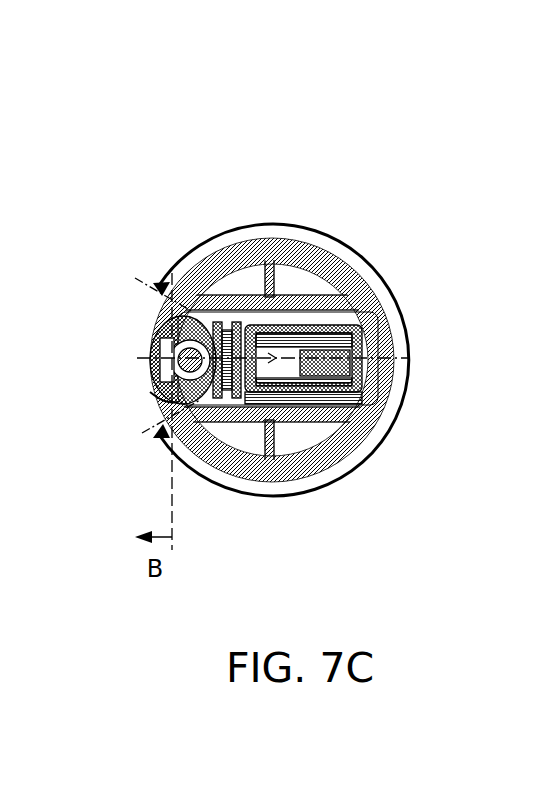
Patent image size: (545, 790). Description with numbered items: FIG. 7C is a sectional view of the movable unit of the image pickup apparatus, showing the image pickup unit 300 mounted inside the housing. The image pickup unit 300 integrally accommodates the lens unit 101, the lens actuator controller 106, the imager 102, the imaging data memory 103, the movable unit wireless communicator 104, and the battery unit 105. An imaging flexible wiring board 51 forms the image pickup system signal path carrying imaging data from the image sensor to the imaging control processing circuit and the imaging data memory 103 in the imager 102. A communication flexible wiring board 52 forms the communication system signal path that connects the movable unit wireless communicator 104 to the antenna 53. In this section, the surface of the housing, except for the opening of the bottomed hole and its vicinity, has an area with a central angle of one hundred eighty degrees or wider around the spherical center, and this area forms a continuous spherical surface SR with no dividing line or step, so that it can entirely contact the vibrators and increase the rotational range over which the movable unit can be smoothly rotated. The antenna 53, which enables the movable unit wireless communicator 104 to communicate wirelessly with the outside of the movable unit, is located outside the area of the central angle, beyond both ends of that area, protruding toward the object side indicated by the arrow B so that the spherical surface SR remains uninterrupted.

The image pickup unit 300 is at (158, 332).
The lens unit 101 is at (148, 338).
The imager 102 is at (234, 250).
The imaging data memory 103 is at (357, 348).
The lens actuator controller 106 is at (233, 332).
The imaging flexible wiring board 51 is at (242, 335).
The battery unit 105 is at (357, 356).
The movable unit wireless communicator 104 is at (285, 398).
The communication flexible wiring board 52 is at (247, 400).
The antenna 53 is at (150, 400).
The spherical surface SR is at (388, 340).